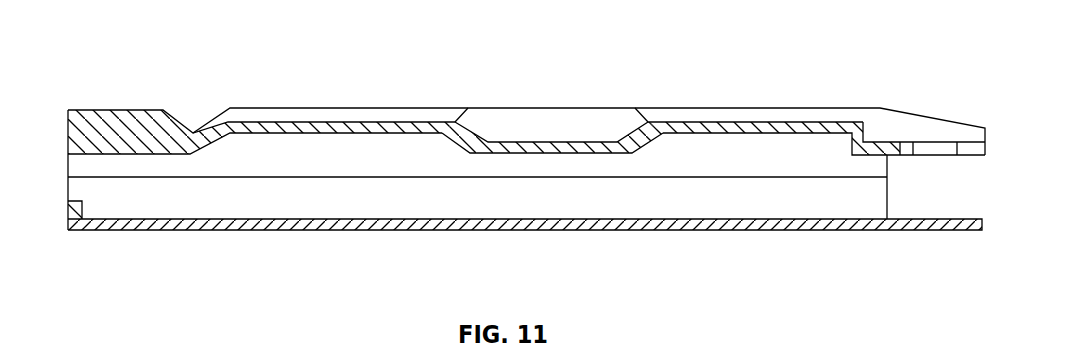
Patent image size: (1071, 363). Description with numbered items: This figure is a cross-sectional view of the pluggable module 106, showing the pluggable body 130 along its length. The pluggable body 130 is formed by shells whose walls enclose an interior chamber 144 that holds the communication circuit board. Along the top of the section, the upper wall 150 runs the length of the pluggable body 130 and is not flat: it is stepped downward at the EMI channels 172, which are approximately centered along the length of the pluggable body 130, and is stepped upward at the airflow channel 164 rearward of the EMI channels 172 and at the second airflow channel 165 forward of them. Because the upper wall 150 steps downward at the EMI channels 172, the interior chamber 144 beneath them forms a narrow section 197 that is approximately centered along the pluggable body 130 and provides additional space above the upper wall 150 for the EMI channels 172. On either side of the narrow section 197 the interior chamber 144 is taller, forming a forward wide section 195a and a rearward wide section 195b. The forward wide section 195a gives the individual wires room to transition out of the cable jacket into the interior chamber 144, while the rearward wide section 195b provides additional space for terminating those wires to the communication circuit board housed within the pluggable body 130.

The pluggable module 106 is at (526, 150).
The upper wall 150 is at (302, 121).
The second airflow channel 165 is at (378, 115).
The EMI channels 172 is at (594, 136).
The airflow channel 164 is at (768, 116).
The interior chamber 144 is at (774, 161).
The rearward wide section 195b is at (297, 191).
The narrow section 197 is at (531, 191).
The forward wide section 195a is at (743, 186).
The pluggable body 130 is at (653, 226).